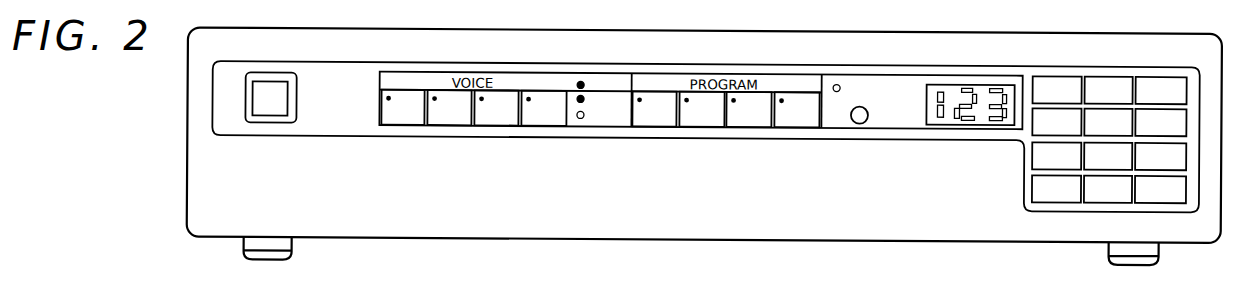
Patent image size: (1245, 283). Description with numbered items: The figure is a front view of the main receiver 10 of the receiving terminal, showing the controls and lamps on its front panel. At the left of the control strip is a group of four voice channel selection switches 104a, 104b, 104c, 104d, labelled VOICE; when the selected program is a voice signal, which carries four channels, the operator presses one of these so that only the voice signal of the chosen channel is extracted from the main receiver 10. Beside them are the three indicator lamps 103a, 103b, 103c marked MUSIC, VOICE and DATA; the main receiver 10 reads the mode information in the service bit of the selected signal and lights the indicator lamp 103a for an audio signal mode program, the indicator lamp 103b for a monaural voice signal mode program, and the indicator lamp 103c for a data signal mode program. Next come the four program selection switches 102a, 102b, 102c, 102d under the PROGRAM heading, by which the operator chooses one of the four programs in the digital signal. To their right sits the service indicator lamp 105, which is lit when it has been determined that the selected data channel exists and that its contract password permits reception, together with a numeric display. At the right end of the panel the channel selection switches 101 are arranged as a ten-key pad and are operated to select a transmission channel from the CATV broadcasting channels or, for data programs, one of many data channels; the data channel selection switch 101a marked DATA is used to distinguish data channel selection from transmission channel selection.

The main receiver 10 is at (1045, 33).
The channel selection switches 101 is at (1082, 174).
The data channel selection switch 101a is at (1024, 224).
The program selection switch 102a is at (661, 124).
The program selection switch 102b is at (710, 124).
The program selection switch 102c is at (758, 124).
The program selection switch 102d is at (808, 124).
The indicator lamp 103a is at (581, 83).
The indicator lamp 103b is at (580, 97).
The indicator lamp 103c is at (583, 124).
The voice channel selection switch 104a is at (405, 124).
The voice channel selection switch 104b is at (455, 124).
The voice channel selection switch 104c is at (502, 124).
The voice channel selection switch 104d is at (553, 124).
The service indicator lamp 105 is at (838, 82).